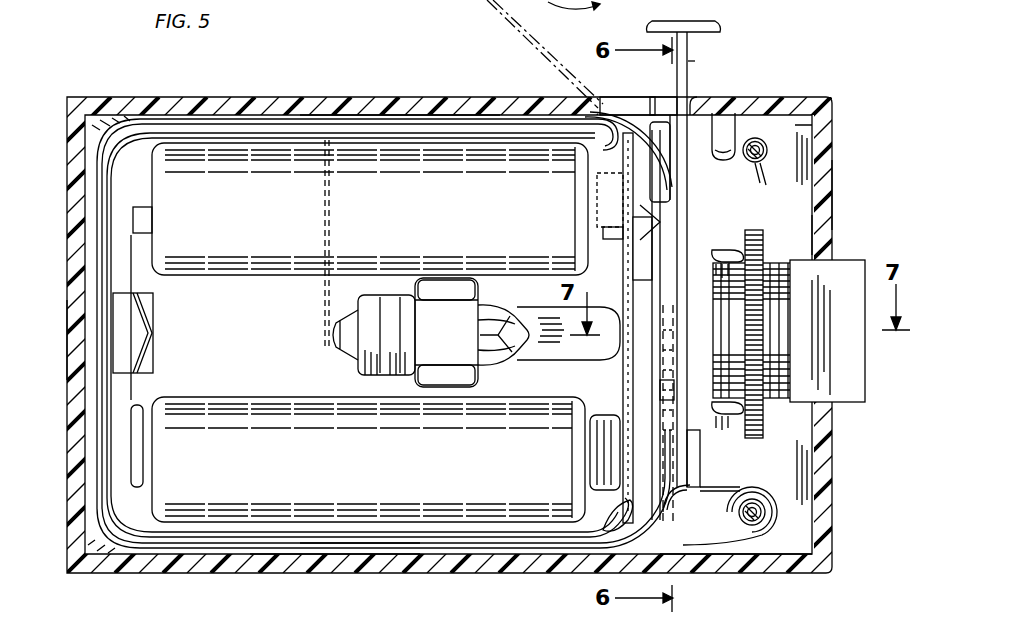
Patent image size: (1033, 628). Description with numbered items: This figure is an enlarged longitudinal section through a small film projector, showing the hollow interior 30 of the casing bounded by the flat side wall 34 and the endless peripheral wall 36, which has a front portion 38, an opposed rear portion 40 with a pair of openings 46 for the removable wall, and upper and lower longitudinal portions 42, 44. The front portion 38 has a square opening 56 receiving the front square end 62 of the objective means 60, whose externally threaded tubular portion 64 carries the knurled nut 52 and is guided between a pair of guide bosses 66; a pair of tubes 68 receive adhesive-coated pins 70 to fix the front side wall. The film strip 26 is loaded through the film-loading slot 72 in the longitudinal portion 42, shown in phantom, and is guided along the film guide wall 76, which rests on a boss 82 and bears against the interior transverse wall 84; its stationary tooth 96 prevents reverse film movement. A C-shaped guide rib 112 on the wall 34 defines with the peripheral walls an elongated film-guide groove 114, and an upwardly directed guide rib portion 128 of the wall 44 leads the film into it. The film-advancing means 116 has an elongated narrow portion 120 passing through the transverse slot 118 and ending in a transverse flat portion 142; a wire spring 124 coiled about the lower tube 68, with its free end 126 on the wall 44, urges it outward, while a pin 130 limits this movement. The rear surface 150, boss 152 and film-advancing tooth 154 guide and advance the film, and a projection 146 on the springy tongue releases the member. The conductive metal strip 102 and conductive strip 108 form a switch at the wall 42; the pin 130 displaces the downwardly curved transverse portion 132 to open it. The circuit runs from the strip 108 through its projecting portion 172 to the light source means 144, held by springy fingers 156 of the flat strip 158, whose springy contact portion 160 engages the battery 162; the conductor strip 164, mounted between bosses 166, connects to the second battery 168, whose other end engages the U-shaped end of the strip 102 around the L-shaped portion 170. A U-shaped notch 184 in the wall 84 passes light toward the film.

The film strip 26 is at (597, 116).
The hollow interior 30 is at (155, 278).
The side wall 34 is at (285, 315).
The endless peripheral wall 36 is at (247, 97).
The front portion 38 is at (826, 194).
The rear portion 40 is at (80, 338).
The longitudinal portion 42 is at (384, 100).
The longitudinal portion 44 is at (318, 574).
The openings 46 is at (594, 14).
The knurled nut 52 is at (764, 240).
The square opening 56 is at (832, 238).
The objective means 60 is at (866, 382).
The front square end 62 is at (826, 385).
The externally threaded tubular portion 64 is at (763, 410).
The guide bosses 66 is at (728, 250).
The tubes 68 is at (767, 150).
The pins 70 is at (768, 162).
The film-loading slot 72 is at (612, 114).
The film guide wall 76 is at (662, 258).
The boss 82 is at (626, 515).
The interior transverse wall 84 is at (623, 270).
The tooth 96 is at (680, 490).
The electrically conductive metal strip 102 is at (630, 113).
The electrically conductive strip 108 is at (470, 138).
The C-shaped guide rib 112 is at (143, 128).
The film-guide groove 114 is at (360, 545).
The film-advancing means 116 is at (688, 61).
The transverse slot 118 is at (694, 112).
The elongated narrow portion 120 is at (688, 44).
The wire spring 124 is at (737, 487).
The free end 126 is at (736, 575).
The guide rib portion 128 is at (670, 510).
The pin 130 is at (722, 128).
The downwardly curved transverse portion 132 is at (725, 160).
The transverse flat portion 142 is at (722, 28).
The light source means 144 is at (350, 376).
The projection 146 is at (676, 320).
The rear surface 150 is at (676, 392).
The boss 152 is at (668, 186).
The film-advancing tooth 154 is at (660, 222).
The conductive springy fingers 156 is at (467, 283).
The flat strip 158 is at (551, 327).
The springy contact portion 160 is at (582, 480).
The battery 162 is at (492, 448).
The conductor strip 164 is at (135, 393).
The bosses 166 is at (140, 360).
The second battery 168 is at (425, 193).
The L-shaped portion 170 is at (611, 221).
The projecting portion 172 is at (325, 347).
The U-shaped notch 184 is at (617, 340).